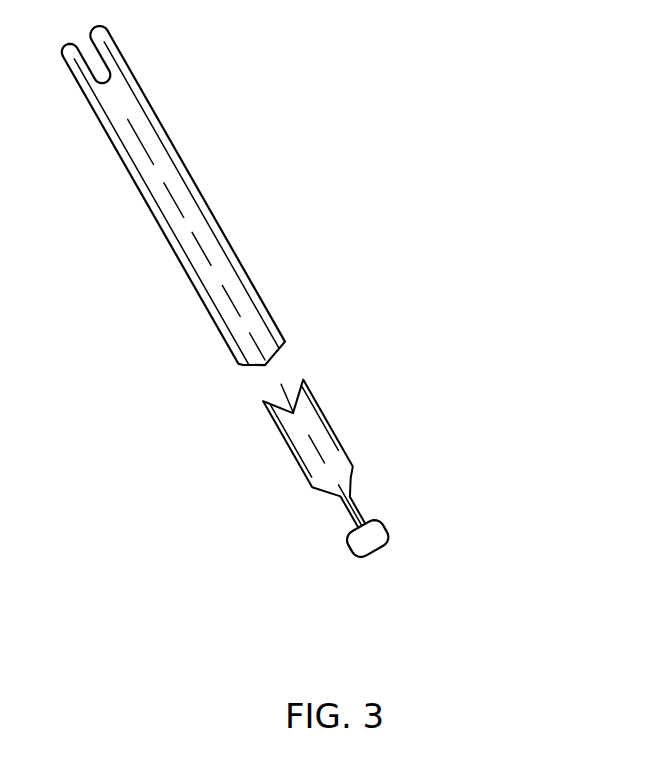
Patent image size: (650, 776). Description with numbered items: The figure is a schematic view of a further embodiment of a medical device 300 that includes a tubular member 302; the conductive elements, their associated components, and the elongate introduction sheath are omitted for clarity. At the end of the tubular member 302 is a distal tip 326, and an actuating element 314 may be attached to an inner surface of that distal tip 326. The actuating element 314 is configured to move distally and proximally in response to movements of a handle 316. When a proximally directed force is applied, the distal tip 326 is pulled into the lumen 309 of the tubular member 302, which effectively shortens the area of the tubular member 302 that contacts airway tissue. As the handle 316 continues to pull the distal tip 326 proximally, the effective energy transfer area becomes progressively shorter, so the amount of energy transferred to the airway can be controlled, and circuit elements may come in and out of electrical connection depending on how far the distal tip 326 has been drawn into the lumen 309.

The medical device 300 is at (447, 178).
The tubular member 302 is at (268, 152).
The lumen 309 is at (227, 275).
The distal tip 326 is at (93, 70).
The actuating element 314 is at (349, 512).
The handle 316 is at (367, 557).